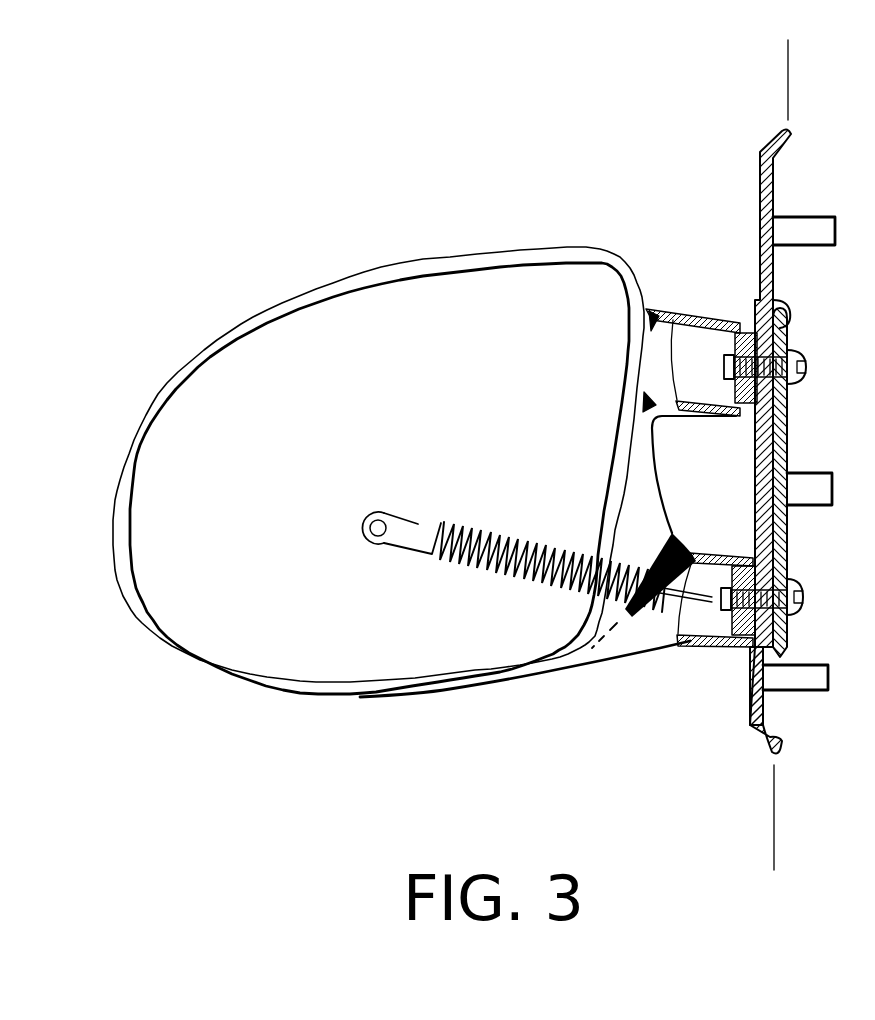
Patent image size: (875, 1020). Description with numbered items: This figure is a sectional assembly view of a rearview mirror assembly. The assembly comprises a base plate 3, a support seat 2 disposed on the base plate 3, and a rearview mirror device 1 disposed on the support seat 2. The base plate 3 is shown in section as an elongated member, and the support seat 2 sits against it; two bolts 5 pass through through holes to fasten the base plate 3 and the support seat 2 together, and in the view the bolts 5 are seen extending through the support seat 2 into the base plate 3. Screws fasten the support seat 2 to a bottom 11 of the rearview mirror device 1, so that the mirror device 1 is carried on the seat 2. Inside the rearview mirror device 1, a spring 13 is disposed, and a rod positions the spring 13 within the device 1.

The rearview mirror device 1 is at (456, 257).
The support seat 2 is at (787, 415).
The base plate 3 is at (768, 146).
The bolt 5 is at (800, 355).
The bottom of the rearview mirror device 11 is at (799, 323).
The spring 13 is at (540, 590).